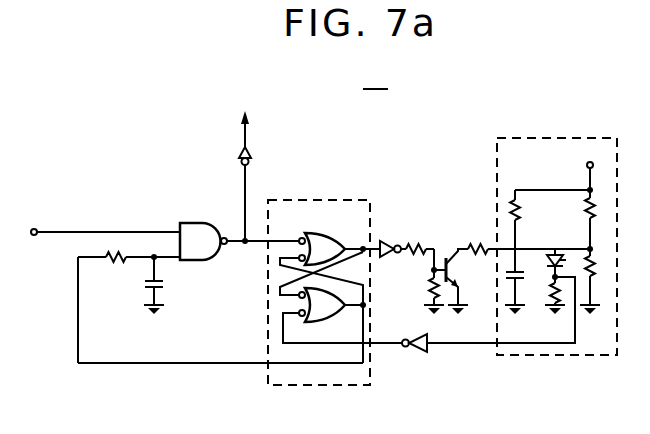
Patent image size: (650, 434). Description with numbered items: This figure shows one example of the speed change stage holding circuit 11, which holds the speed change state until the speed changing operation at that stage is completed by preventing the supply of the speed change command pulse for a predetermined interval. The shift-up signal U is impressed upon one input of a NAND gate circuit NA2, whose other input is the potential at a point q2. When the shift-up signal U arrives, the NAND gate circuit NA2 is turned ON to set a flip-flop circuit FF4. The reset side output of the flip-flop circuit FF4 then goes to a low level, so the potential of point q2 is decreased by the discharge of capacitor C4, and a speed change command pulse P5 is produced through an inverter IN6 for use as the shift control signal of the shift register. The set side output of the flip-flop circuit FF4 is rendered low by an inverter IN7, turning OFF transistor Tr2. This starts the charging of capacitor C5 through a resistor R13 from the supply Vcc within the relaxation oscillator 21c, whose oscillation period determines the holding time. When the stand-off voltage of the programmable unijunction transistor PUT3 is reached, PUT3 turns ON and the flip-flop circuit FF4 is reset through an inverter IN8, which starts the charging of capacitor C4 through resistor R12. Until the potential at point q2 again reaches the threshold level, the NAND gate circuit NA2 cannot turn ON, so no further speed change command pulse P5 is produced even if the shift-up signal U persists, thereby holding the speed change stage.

The speed change stage holding circuit 11 is at (378, 77).
The shift-up signal U is at (103, 220).
The NAND gate circuit NA2 is at (200, 223).
The resistor R12 is at (116, 262).
The point q2 is at (158, 262).
The capacitor C4 is at (160, 286).
The speed change command pulse P5 is at (246, 162).
The inverter IN6 is at (259, 151).
The flip-flop circuit FF4 is at (311, 200).
The inverter IN7 is at (382, 240).
The transistor Tr2 is at (456, 266).
The relaxation oscillator 21c is at (526, 136).
The supply voltage terminal Vcc is at (565, 227).
The resistor R13 is at (511, 206).
The capacitor C5 is at (519, 276).
The programmable unijunction transistor PUT3 is at (553, 254).
The inverter IN8 is at (414, 350).